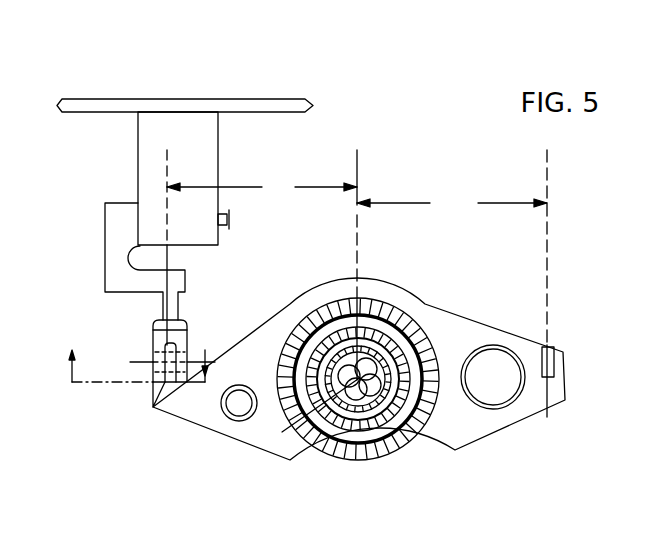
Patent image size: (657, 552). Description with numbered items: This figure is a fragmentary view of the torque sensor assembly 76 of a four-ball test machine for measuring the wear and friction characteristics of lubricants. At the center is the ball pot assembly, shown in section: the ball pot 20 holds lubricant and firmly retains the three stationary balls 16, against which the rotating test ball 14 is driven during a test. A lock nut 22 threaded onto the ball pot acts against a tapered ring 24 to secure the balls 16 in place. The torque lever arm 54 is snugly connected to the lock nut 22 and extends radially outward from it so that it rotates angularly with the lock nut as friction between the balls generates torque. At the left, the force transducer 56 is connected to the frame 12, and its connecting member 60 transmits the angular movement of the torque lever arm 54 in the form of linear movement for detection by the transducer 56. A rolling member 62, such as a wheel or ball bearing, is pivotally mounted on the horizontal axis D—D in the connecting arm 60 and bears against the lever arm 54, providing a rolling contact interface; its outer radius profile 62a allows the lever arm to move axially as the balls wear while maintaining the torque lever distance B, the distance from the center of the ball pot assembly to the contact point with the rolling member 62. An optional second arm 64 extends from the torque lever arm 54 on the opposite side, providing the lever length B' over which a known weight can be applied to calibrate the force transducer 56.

The frame 12 is at (202, 99).
The force transducer 56 is at (138, 165).
The connecting member 60 is at (105, 272).
The rolling member 62 is at (153, 378).
The outer radius profile 62a is at (153, 407).
The torque lever arm 54 is at (217, 434).
The test ball 14 is at (282, 432).
The second arm 64 is at (527, 417).
The torque sensor assembly 76 is at (350, 140).
The stationary balls 16 is at (425, 395).
The lock nut 22 is at (305, 423).
The ball pot 20 is at (343, 433).
The tapered ring 24 is at (400, 443).